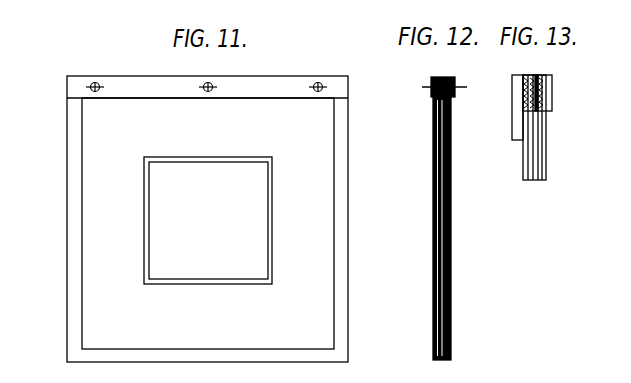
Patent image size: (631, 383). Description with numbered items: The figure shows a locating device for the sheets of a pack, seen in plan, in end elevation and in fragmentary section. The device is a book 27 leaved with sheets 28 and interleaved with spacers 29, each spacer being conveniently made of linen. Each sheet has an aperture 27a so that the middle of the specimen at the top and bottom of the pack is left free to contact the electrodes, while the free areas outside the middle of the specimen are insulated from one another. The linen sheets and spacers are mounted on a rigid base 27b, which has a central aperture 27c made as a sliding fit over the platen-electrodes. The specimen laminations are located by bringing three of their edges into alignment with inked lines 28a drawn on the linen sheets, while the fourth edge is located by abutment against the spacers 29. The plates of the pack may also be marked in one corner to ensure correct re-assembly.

In FIG. 11, the book 27 is at (342, 196).
In FIG. 11, the aperture 27a is at (296, 150).
In FIG. 12, the rigid base 27b is at (433, 325).
In FIG. 11, the central aperture 27c is at (264, 270).
In FIG. 12, the sheets 28 is at (453, 350).
In FIG. 13, the sheets 28 is at (546, 156).
In FIG. 11, the inked lines 28a is at (90, 310).
In FIG. 13, the spacers 29 is at (552, 101).